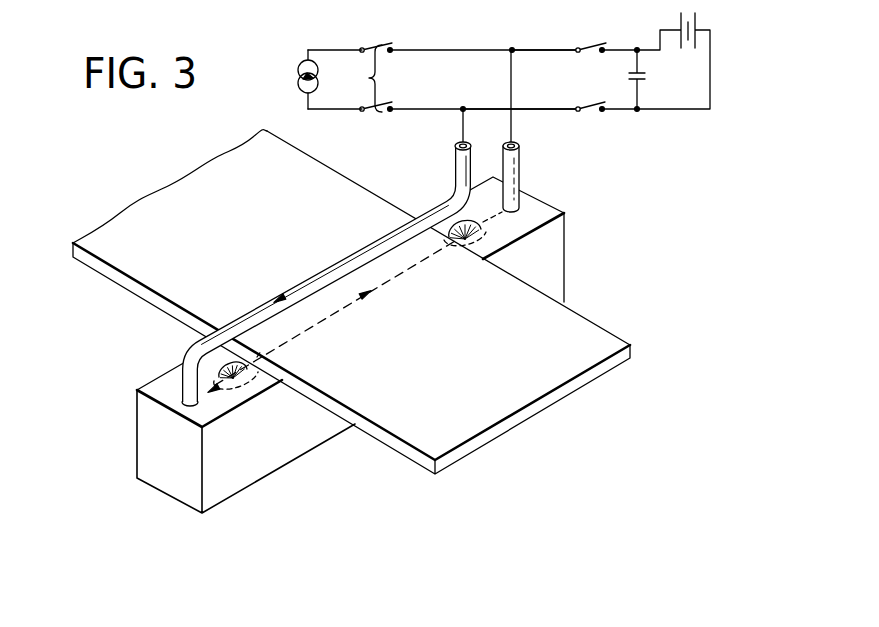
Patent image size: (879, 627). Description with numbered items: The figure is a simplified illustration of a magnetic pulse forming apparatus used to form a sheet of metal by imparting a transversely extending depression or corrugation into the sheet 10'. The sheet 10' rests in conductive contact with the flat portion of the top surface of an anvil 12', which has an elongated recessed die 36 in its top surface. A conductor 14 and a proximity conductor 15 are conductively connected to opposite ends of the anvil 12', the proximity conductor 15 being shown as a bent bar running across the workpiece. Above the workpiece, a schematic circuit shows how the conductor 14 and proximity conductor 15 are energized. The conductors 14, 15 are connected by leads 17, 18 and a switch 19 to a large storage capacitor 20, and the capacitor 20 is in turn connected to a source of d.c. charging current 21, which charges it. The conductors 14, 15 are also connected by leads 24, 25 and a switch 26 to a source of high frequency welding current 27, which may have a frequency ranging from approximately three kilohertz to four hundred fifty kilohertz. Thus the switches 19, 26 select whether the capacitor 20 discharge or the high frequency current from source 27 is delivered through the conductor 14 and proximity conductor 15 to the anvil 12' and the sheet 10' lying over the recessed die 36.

The sheet 10' is at (378, 301).
The anvil 12' is at (246, 429).
The conductor 14 is at (521, 172).
The proximity conductor 15 is at (438, 201).
The recessed die 36 is at (472, 250).
The lead 17 is at (533, 107).
The lead 18 is at (536, 48).
The switch 19 is at (590, 48).
The storage capacitor 20 is at (643, 79).
The source of d.c. charging current 21 is at (698, 18).
The lead 24 is at (418, 108).
The lead 25 is at (440, 49).
The switch 26 is at (364, 77).
The source of high frequency welding current 27 is at (298, 75).